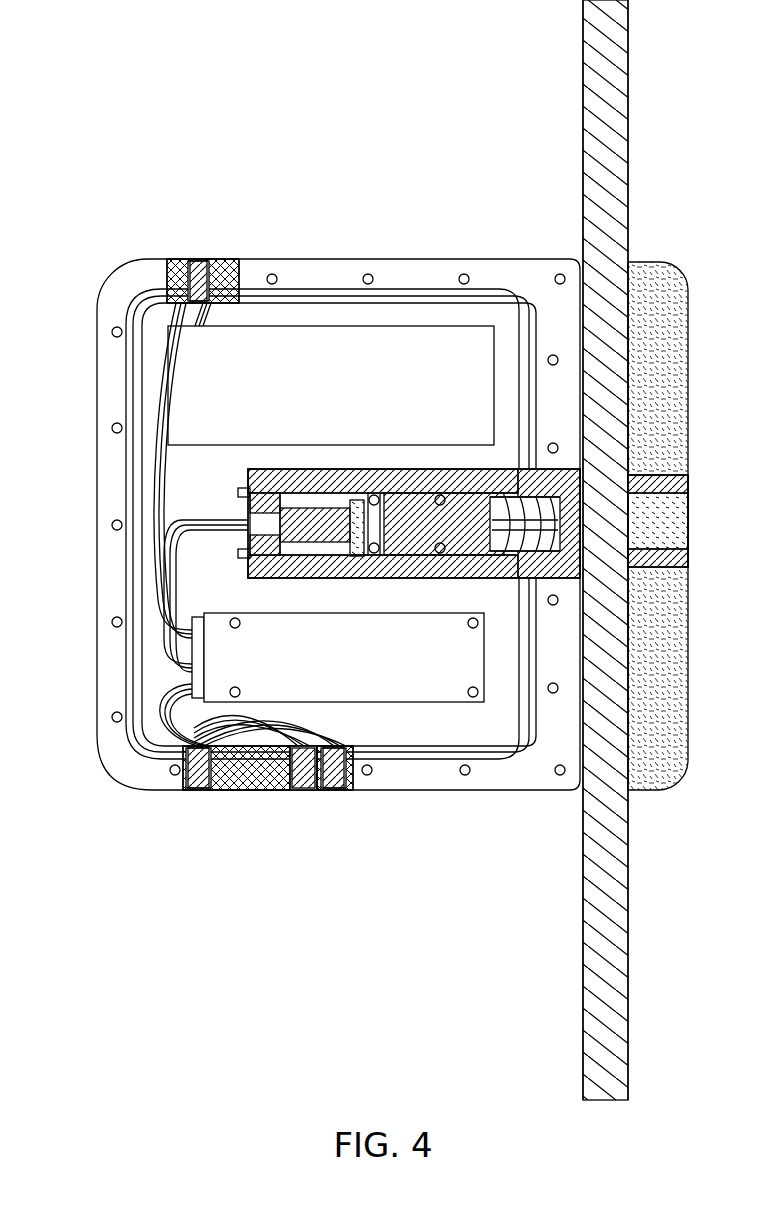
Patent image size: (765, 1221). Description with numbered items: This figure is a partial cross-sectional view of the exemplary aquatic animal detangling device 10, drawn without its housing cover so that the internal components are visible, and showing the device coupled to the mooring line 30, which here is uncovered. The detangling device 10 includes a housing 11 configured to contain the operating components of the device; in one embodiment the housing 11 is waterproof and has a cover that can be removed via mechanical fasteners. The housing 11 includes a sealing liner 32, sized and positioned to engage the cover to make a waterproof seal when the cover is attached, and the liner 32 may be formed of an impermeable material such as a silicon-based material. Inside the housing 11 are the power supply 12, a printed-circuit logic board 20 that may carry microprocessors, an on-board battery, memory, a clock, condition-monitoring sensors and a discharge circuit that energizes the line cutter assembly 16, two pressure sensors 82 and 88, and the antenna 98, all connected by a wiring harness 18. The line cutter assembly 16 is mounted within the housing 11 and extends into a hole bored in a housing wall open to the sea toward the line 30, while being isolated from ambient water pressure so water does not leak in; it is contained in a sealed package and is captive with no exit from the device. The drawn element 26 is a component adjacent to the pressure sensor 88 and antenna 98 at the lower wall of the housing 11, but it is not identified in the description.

The detangling device 10 is at (121, 181).
The housing 11 is at (550, 300).
The power supply 12 is at (319, 406).
The line cutter assembly 16 is at (201, 492).
The wiring harness 18 is at (160, 673).
The printed-circuit logic board 20 is at (319, 672).
The cable gland 26 is at (293, 781).
The line 30 is at (607, 227).
The sealing liner 32 is at (127, 373).
The pressure sensor 82 is at (197, 260).
The pressure sensor 88 is at (198, 781).
The antenna 98 is at (332, 781).